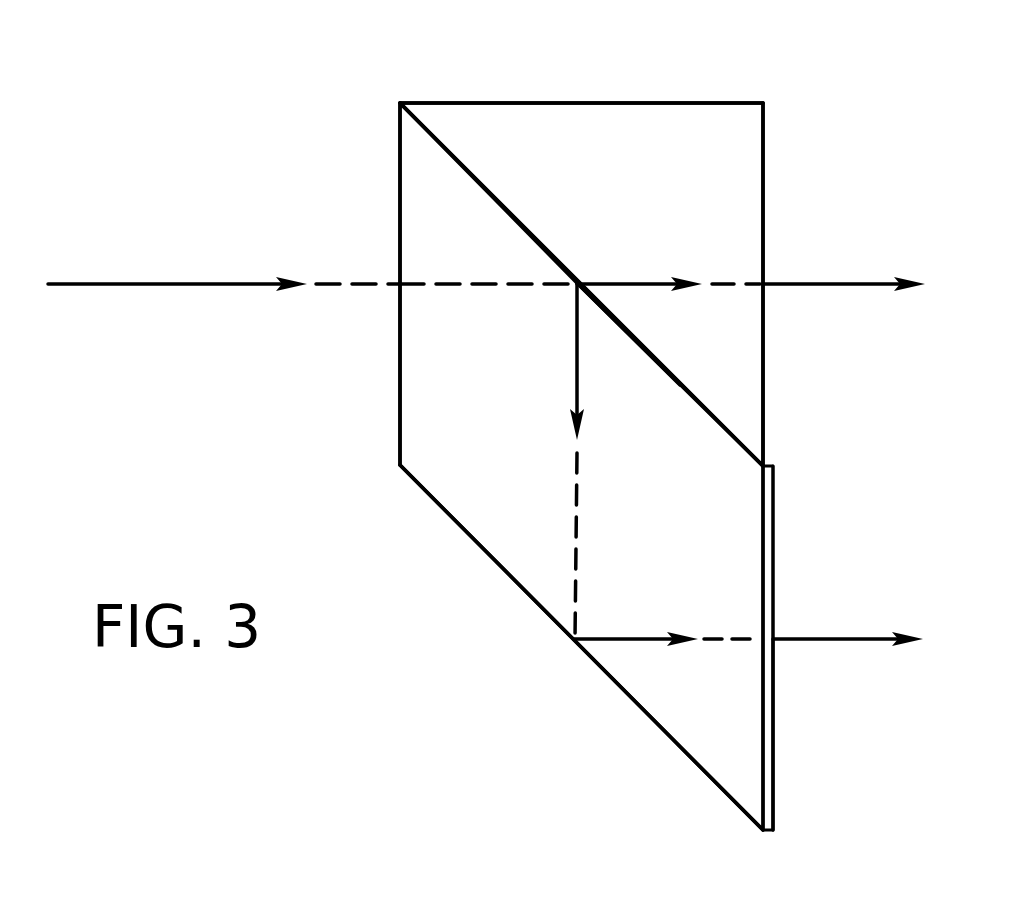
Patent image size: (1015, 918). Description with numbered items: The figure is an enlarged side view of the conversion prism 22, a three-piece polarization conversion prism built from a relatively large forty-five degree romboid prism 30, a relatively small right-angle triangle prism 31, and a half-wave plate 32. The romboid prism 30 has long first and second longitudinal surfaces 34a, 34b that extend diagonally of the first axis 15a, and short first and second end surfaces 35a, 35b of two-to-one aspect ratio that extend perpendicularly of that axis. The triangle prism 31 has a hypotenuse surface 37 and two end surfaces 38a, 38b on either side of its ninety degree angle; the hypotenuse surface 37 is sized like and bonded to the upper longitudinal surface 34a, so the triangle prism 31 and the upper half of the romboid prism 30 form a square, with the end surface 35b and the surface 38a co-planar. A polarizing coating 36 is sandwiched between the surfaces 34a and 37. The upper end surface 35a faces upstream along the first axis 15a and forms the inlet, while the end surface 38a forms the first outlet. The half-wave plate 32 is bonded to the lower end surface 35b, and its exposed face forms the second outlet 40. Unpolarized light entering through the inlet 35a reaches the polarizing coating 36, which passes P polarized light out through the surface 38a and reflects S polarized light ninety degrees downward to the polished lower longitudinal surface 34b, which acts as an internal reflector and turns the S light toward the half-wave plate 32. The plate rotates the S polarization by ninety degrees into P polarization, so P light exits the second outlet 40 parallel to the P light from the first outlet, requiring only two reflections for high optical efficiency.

The conversion prism 22 is at (305, 126).
The first axis 15a is at (162, 285).
The right-angle triangle prism 31 is at (658, 228).
The romboid prism 30 is at (690, 504).
The end surface of triangle prism 38b is at (597, 103).
The end surface of triangle prism 38a is at (763, 340).
The hypotenuse surface 37 is at (537, 243).
The polarizing coating 36 is at (607, 307).
The first longitudinal surface 34a is at (663, 368).
The second longitudinal surface 34b is at (560, 635).
The first end surface 35a is at (398, 399).
The second end surface 35b is at (768, 684).
The second outlet 40 is at (773, 486).
The half-wave plate 32 is at (768, 604).
The P light polarization P is at (660, 283).
The S light polarization S is at (574, 380).